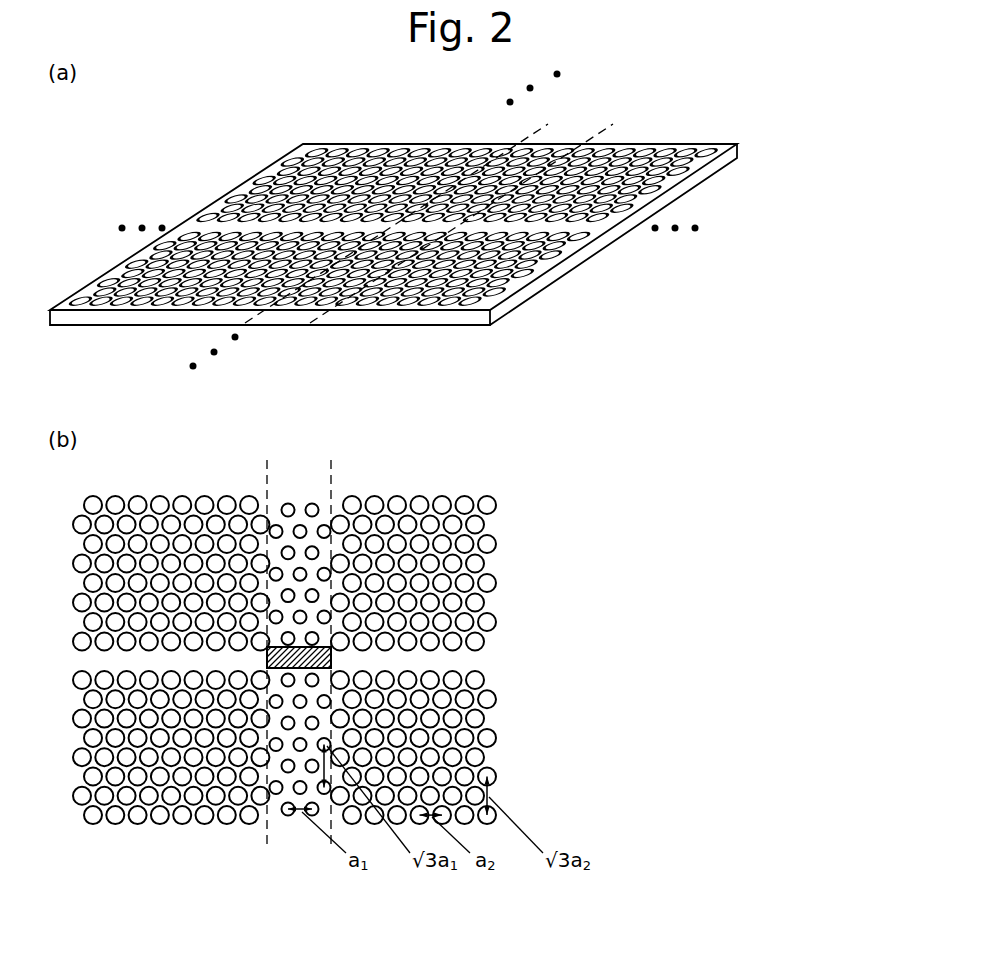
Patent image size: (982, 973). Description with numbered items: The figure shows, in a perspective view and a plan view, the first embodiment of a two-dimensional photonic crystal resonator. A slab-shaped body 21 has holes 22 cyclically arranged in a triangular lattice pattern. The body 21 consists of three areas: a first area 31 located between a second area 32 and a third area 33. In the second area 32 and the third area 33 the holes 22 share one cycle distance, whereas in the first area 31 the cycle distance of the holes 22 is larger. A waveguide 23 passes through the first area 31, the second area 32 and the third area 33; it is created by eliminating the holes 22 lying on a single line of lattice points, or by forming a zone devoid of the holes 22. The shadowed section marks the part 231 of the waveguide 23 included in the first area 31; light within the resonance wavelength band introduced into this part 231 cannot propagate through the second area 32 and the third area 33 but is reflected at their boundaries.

The slab-shaped body 21 is at (740, 144).
The holes 22 is at (113, 270).
The waveguide 23 is at (195, 228).
The first area 31 is at (583, 132).
The second area 32 is at (518, 132).
The third area 33 is at (747, 132).
The part of the waveguide 231 is at (296, 668).